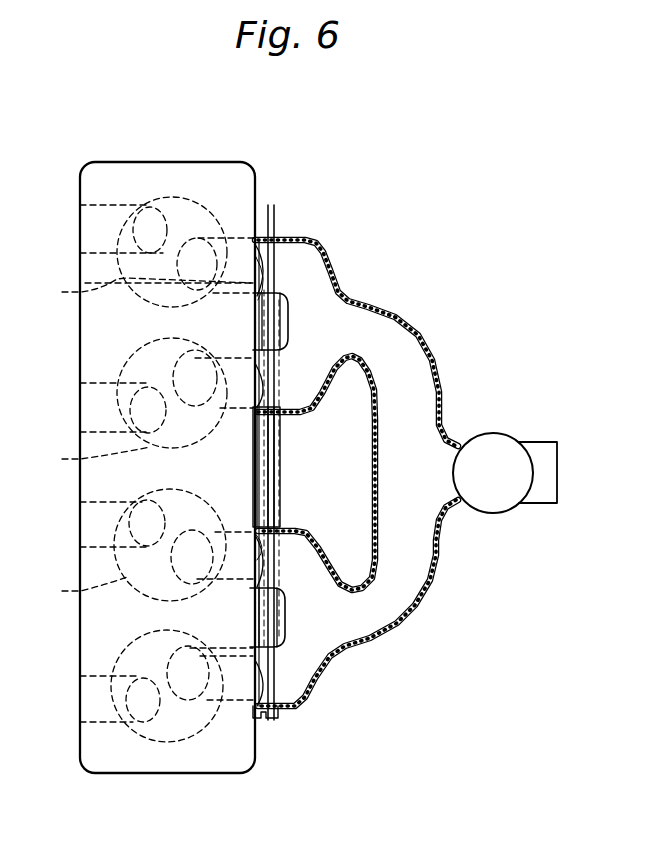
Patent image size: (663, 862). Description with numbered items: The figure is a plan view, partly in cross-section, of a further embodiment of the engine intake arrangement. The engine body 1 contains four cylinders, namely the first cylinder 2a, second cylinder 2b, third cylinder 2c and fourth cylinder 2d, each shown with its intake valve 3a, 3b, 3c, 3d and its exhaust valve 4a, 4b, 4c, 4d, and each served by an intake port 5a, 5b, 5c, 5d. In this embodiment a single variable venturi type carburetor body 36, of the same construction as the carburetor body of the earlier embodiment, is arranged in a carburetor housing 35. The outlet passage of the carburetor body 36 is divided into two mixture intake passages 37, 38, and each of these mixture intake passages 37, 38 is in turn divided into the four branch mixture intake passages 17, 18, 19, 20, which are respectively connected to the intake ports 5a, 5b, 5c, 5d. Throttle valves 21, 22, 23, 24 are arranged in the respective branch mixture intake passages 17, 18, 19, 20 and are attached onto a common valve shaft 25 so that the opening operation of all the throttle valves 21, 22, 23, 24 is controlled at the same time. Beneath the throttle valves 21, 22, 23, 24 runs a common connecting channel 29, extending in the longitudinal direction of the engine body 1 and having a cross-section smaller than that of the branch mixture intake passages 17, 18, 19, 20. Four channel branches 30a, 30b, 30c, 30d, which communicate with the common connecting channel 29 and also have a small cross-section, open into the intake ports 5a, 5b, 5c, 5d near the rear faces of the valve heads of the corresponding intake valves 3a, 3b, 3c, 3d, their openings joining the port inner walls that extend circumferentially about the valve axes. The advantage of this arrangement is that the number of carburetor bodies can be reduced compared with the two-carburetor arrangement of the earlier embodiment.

The engine body 1 is at (265, 168).
The No. 1 cylinder 2a is at (139, 254).
The No. 2 cylinder 2b is at (87, 426).
The No. 3 cylinder 2c is at (86, 552).
The No. 4 cylinder 2d is at (157, 737).
The intake valve 3a is at (203, 247).
The intake valve 3b is at (197, 363).
The intake valve 3c is at (196, 528).
The intake valve 3d is at (190, 650).
The exhaust valve 4a is at (150, 212).
The exhaust valve 4b is at (142, 390).
The exhaust valve 4c is at (143, 507).
The exhaust valve 4d is at (140, 680).
The intake port 5a is at (240, 238).
The intake port 5b is at (228, 412).
The intake port 5c is at (226, 532).
The intake port 5d is at (227, 700).
The branch mixture intake passage 17 is at (283, 273).
The branch mixture intake passage 18 is at (292, 374).
The branch mixture intake passage 19 is at (270, 536).
The branch mixture intake passage 20 is at (282, 672).
The throttle valve 21 is at (272, 252).
The throttle valve 22 is at (270, 383).
The throttle valve 23 is at (290, 538).
The throttle valve 24 is at (270, 712).
The common valve shaft 25 is at (270, 483).
The common connecting channel 29 is at (270, 460).
The channel branch 30a is at (244, 288).
The channel branch 30b is at (246, 300).
The channel branch 30c is at (243, 583).
The channel branch 30d is at (243, 652).
The carburetor housing 35 is at (403, 310).
The variable venturi type carburetor body 36 is at (497, 438).
The mixture intake passage 37 is at (415, 374).
The mixture intake passage 38 is at (406, 599).